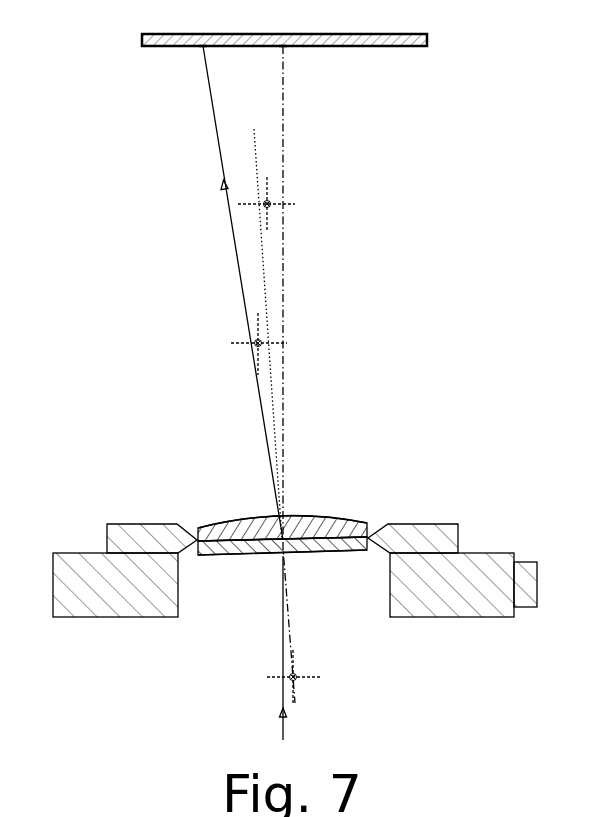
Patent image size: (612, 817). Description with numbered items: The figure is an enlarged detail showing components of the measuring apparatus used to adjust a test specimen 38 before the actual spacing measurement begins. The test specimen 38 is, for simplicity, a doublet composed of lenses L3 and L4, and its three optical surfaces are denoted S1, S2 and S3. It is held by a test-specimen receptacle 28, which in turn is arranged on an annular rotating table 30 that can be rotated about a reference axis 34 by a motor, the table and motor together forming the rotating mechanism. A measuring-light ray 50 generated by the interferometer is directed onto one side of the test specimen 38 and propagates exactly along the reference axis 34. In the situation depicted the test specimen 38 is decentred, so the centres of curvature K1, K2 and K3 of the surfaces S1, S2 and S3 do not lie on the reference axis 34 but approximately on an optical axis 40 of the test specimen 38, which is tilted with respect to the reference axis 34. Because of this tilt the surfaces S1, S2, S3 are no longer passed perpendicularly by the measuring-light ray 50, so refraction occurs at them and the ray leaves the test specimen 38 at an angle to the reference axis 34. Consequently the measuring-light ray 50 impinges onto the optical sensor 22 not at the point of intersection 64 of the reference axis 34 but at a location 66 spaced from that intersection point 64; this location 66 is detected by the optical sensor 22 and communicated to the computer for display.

The optical sensor 22 is at (374, 43).
The location 66 is at (203, 47).
The point of intersection 64 is at (287, 47).
The reference axis 34 is at (284, 245).
The optical axis 40 is at (254, 142).
The measuring-light ray 50 is at (211, 101).
The centre of curvature K3 is at (270, 204).
The centre of curvature K2 is at (255, 343).
The centre of curvature K1 is at (300, 677).
The test-specimen receptacle 28 is at (416, 528).
The rotating table 30 is at (474, 566).
The test specimen 38 is at (259, 557).
The lens L3 is at (317, 527).
The lens L4 is at (225, 557).
The optical surface S1 is at (226, 523).
The optical surface S2 is at (240, 545).
The optical surface S3 is at (317, 558).